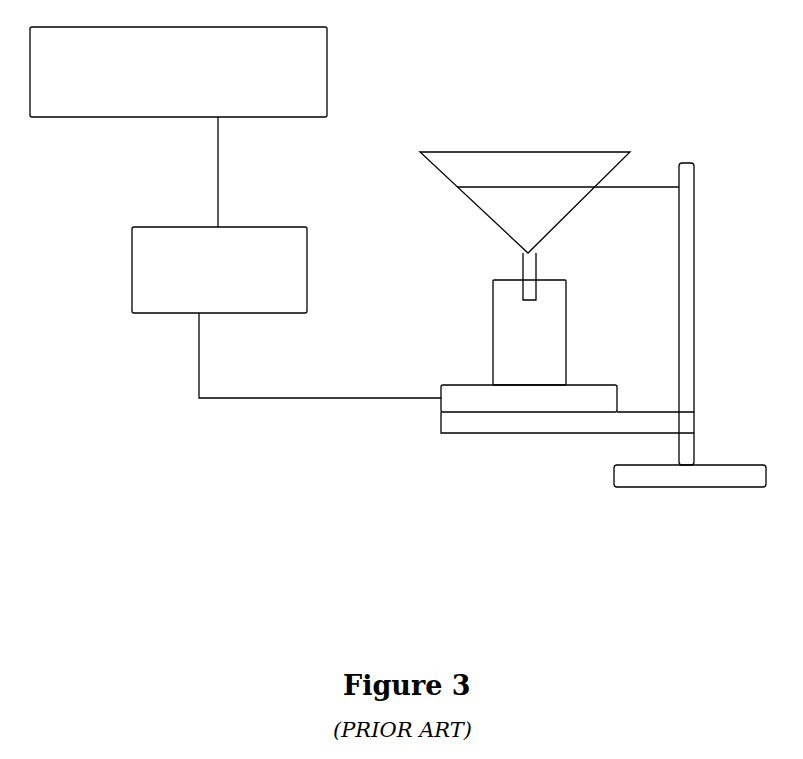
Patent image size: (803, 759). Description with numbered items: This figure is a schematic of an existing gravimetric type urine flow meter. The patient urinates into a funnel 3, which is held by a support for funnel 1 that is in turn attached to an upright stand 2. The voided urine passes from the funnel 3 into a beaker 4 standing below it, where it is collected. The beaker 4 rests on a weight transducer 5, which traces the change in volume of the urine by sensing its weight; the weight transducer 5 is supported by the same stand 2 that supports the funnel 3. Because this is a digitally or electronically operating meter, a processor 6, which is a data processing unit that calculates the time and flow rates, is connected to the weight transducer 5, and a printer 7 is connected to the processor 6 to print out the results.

The support for funnel 1 is at (651, 181).
The stand 2 is at (683, 492).
The funnel 3 is at (549, 145).
The beaker 4 is at (487, 335).
The weight transducer 5 is at (529, 396).
The processor 6 is at (155, 302).
The printer 7 is at (60, 102).